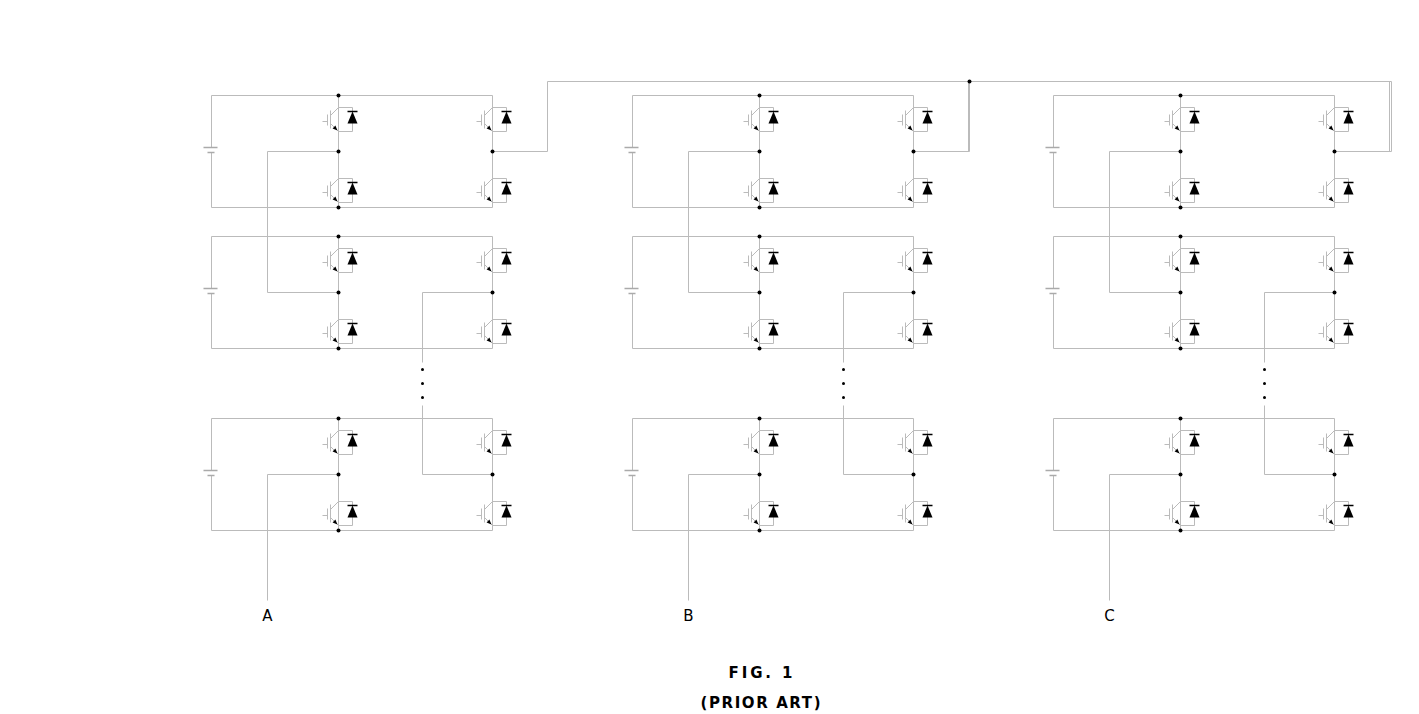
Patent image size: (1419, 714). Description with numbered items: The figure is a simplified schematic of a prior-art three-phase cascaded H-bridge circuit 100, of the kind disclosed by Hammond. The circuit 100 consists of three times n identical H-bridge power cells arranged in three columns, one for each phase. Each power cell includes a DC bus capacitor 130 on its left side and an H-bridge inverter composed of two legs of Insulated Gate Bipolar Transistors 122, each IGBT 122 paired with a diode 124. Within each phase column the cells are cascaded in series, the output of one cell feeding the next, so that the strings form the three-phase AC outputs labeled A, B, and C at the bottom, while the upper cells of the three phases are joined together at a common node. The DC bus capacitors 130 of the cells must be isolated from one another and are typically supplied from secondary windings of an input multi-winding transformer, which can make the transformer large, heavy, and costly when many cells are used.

The 3-phase cascaded H-bridge circuit 100 is at (757, 52).
The Insulated Gate Bipolar Transistor 122 is at (816, 321).
The diode 124 is at (859, 321).
The DC bus capacitor 130 is at (203, 147).